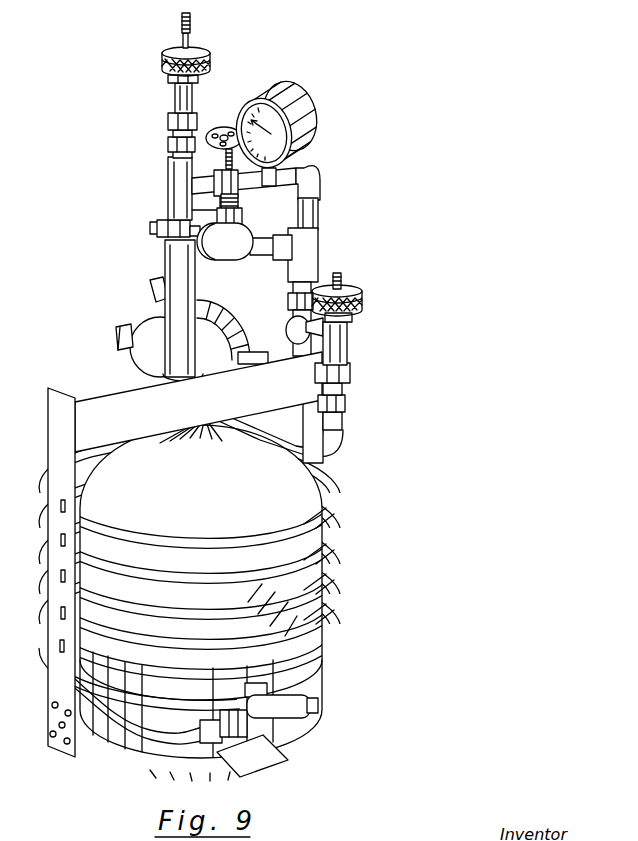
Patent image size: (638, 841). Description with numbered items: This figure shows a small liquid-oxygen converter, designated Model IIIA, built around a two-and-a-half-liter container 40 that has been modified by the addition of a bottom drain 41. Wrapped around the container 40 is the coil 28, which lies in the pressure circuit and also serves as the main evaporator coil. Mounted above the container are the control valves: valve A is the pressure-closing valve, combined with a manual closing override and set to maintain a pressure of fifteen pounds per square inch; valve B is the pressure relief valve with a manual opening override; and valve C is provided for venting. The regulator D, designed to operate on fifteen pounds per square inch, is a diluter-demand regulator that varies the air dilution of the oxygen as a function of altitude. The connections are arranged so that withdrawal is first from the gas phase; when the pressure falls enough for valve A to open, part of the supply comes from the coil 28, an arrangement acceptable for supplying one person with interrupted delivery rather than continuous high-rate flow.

The container 40 is at (255, 494).
The coil 28 is at (333, 540).
The bottom drain 41 is at (315, 705).
The pressure-closing valve A is at (362, 302).
The pressure relief valve B is at (160, 62).
The venting valve C is at (250, 231).
The regulator D is at (139, 325).